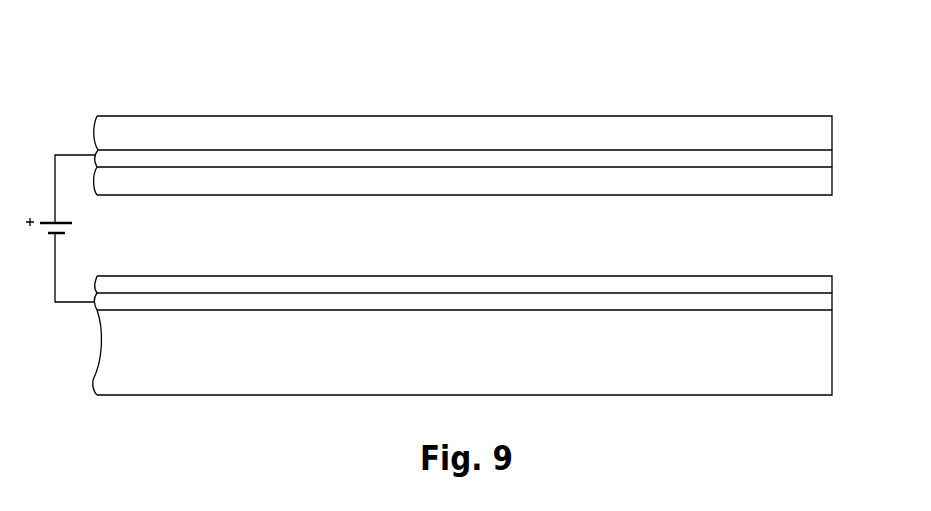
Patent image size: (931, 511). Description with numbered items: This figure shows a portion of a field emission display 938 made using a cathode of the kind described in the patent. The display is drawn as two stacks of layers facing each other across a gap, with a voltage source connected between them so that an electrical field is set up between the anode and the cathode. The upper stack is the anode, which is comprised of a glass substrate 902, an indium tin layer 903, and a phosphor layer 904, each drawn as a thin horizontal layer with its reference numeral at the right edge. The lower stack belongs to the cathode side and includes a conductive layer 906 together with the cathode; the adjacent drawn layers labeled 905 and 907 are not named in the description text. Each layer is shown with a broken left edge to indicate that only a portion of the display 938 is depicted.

The field emission display 938 is at (610, 97).
The glass substrate 902 is at (832, 118).
The indium tin layer 903 is at (832, 152).
The phosphor layer 904 is at (832, 190).
The fourth layer 905 is at (832, 278).
The conductive layer 906 is at (832, 303).
The substrate layer 907 is at (832, 337).